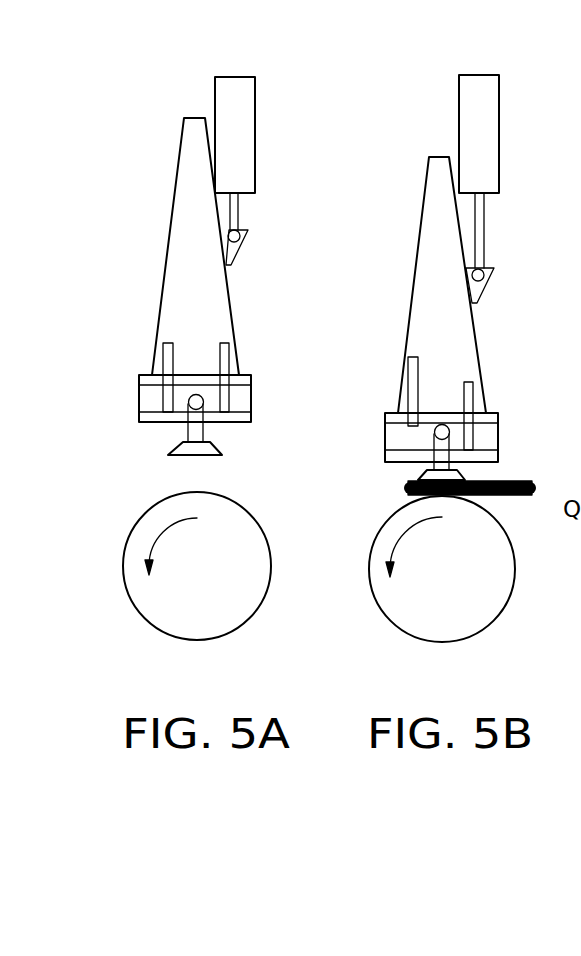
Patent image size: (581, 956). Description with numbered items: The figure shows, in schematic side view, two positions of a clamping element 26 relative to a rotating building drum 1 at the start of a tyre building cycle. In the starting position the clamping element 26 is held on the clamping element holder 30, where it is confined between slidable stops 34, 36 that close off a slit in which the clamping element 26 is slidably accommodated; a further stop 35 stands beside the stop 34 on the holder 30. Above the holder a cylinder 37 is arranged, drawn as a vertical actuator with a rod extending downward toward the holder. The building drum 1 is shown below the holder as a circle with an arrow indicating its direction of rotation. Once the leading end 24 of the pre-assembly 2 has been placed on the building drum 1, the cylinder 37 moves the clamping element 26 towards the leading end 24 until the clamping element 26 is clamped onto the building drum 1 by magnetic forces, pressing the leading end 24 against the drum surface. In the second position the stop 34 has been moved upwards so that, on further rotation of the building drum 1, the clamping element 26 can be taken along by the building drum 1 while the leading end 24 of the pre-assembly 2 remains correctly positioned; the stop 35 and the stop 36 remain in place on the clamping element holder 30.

In FIG. 5A, the building drum 1 is at (175, 602).
In FIG. 5B, the building drum 1 is at (420, 617).
In FIG. 5B, the pre-assembly 2 is at (530, 478).
In FIG. 5B, the leading end 24 is at (408, 488).
In FIG. 5A, the clamping element 26 is at (197, 455).
In FIG. 5A, the clamping element holder 30 is at (183, 209).
In FIG. 5A, the slidable stop 34 is at (168, 338).
In FIG. 5A, the stop 35 is at (223, 338).
In FIG. 5A, the slidable stop 36 is at (209, 395).
In FIG. 5B, the cylinder 37 is at (489, 142).